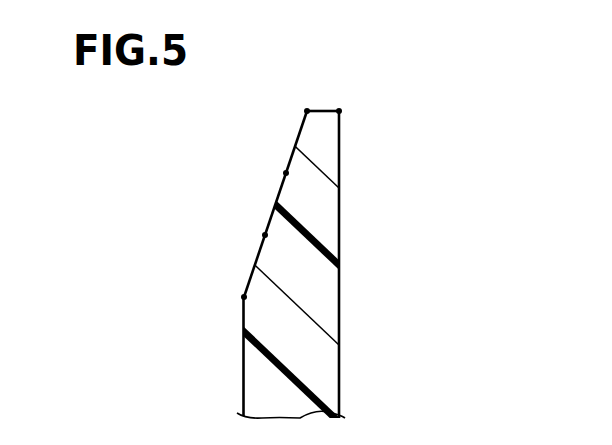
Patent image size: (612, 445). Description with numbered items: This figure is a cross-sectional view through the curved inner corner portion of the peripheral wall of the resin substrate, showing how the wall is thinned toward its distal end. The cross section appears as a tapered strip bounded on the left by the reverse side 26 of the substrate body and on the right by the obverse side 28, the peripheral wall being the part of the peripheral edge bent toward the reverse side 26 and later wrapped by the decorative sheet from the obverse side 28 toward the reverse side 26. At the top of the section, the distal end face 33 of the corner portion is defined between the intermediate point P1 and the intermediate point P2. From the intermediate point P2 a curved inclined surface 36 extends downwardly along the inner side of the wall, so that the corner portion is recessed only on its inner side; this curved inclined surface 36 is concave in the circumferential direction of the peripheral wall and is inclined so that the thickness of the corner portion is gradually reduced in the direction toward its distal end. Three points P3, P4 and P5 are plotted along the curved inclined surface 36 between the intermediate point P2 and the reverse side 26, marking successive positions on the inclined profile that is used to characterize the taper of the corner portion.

The intermediate point P1 is at (339, 108).
The intermediate point P2 is at (306, 108).
The point P3 is at (286, 170).
The point P4 is at (265, 232).
The point P5 is at (244, 294).
The distal end face 33 is at (322, 110).
The curved inclined surface 36 is at (259, 256).
The reverse side 26 is at (243, 373).
The obverse side 28 is at (339, 373).